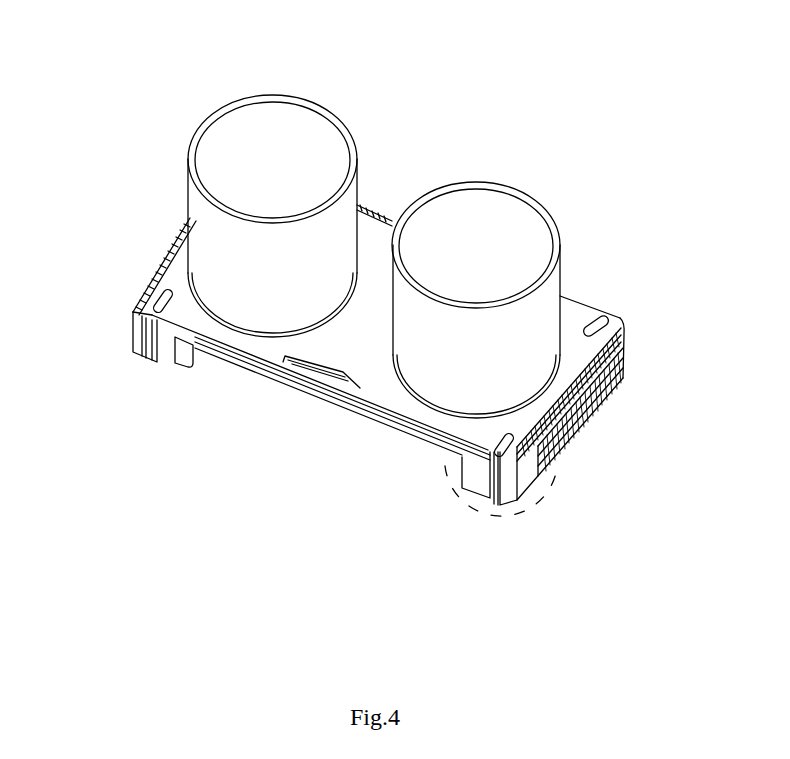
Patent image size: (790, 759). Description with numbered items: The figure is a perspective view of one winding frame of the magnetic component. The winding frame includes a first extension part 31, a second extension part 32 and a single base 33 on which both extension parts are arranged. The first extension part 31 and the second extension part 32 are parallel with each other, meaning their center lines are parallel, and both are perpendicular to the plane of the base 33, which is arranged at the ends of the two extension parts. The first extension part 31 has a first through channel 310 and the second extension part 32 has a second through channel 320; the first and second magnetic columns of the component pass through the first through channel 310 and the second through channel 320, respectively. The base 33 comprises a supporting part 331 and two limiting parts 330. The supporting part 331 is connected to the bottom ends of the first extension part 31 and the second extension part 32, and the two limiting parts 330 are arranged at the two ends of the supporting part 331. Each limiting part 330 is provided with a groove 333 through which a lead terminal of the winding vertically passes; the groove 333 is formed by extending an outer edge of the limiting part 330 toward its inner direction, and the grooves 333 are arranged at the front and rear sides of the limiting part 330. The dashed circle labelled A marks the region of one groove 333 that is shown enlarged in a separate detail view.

The first extension part 31 is at (232, 184).
The first through channel 310 is at (267, 126).
The second extension part 32 is at (516, 262).
The second through channel 320 is at (472, 208).
The base 33 is at (377, 415).
The limiting part 330 is at (170, 277).
The supporting part 331 is at (347, 355).
The groove 333 is at (612, 303).
The detail region A is at (501, 504).